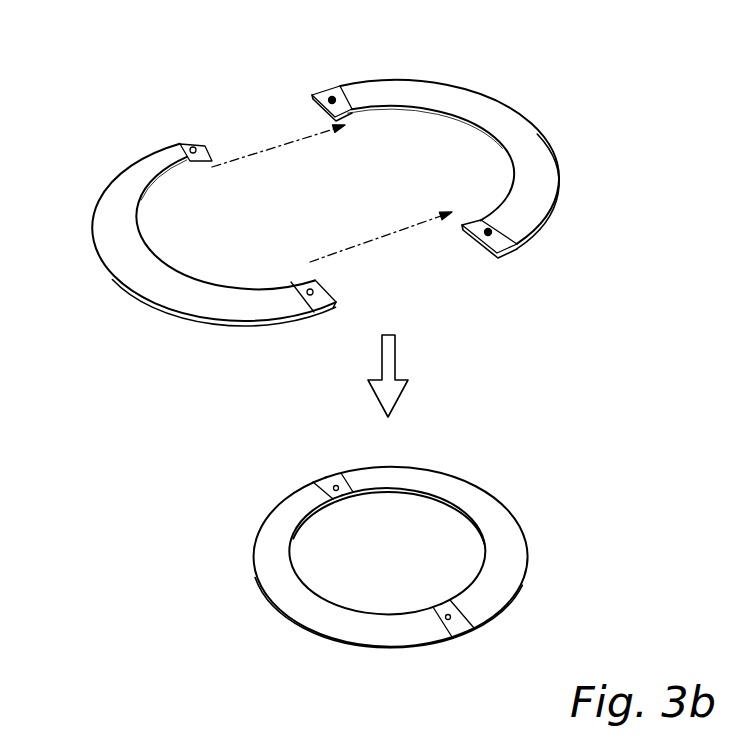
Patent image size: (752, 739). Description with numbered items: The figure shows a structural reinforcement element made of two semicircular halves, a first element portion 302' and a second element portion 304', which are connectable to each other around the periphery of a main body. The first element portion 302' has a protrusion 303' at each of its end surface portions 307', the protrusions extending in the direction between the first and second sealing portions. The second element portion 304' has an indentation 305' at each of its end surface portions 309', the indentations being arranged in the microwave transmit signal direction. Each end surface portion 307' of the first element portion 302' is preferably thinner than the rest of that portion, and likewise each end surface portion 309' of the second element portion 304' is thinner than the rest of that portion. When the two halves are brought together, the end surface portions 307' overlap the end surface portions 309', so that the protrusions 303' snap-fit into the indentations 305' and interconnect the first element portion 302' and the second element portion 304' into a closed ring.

The first element portion 302' is at (250, 393).
The protrusion 303' is at (266, 185).
The second element portion 304' is at (442, 343).
The indentation 305' is at (470, 127).
The end surface portion 307' is at (325, 391).
The end surface portion 309' is at (466, 361).